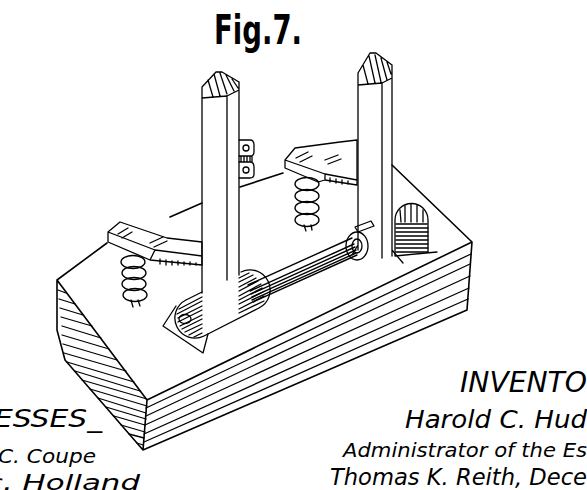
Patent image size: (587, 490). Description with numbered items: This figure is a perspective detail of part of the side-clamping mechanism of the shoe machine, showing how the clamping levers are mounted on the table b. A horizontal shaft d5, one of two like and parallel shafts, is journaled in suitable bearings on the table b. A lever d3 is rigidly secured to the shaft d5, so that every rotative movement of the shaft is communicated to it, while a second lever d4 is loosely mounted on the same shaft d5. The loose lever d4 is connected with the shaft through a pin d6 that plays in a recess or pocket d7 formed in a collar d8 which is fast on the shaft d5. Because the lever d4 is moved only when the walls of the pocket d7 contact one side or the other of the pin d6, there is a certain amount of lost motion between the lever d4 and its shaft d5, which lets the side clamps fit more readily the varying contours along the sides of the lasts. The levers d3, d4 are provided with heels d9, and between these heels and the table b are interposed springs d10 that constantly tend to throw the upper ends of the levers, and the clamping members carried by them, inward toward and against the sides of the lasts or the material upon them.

The table b is at (457, 248).
The lever d3 is at (230, 120).
The lever d4 is at (383, 110).
The horizontal shaft d5 is at (302, 282).
The pin d6 is at (362, 225).
The recess or pocket d7 is at (346, 244).
The collar d8 is at (373, 262).
The heel d9 is at (318, 124).
The spring d10 is at (306, 227).